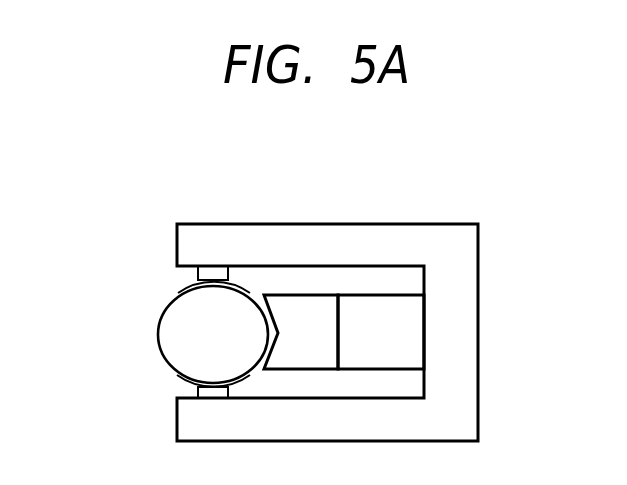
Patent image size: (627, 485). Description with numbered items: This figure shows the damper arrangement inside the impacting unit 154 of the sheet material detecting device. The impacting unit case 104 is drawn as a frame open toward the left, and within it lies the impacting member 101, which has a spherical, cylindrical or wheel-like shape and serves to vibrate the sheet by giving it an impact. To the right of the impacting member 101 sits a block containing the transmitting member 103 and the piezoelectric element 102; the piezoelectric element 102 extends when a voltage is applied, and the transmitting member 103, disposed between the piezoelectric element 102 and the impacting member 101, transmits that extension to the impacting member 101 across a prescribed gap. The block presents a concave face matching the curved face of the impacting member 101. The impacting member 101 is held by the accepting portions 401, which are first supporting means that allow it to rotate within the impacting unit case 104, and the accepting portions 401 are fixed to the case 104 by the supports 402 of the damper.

The impacting unit 154 is at (450, 185).
The impacting unit case 104 is at (472, 249).
The impacting member 101 is at (238, 310).
The piezoelectric element 102 is at (377, 317).
The transmitting member 103 is at (303, 317).
The accepting portions 401 is at (177, 290).
The supports 402 is at (208, 272).